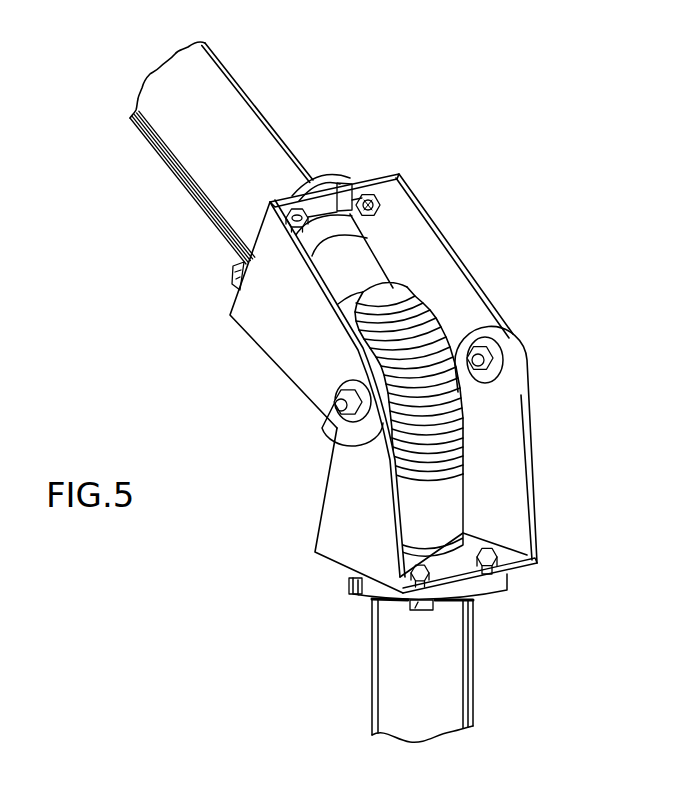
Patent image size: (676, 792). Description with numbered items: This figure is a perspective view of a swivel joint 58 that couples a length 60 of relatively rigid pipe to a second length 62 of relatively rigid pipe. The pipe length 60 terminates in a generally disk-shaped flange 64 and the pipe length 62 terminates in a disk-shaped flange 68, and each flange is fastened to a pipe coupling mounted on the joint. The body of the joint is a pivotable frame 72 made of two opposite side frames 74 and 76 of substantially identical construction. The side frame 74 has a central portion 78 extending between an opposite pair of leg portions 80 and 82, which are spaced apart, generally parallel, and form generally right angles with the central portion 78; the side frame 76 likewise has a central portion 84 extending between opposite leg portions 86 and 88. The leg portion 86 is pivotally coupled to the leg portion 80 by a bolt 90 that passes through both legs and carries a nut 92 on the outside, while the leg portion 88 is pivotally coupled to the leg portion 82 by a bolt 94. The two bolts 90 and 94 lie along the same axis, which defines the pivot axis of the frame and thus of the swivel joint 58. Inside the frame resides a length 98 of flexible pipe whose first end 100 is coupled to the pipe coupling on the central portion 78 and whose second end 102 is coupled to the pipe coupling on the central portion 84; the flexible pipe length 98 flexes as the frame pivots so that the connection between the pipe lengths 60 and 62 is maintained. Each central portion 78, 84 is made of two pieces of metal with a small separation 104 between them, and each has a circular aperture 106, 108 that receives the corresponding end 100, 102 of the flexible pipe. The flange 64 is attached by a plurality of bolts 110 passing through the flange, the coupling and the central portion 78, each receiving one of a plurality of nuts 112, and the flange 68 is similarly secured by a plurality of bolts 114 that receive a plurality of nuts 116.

The swivel joint 58 is at (398, 378).
The length of relatively rigid pipe 60 is at (457, 668).
The length of relatively rigid pipe 62 is at (222, 85).
The disk-shaped flange 64 is at (468, 590).
The disk-shaped flange 68 is at (372, 183).
The pivotable frame 72 is at (434, 468).
The side frame 74 is at (514, 517).
The side frame 76 is at (365, 361).
The central portion 78 is at (524, 566).
The leg portion 80 is at (336, 500).
The leg portion 82 is at (518, 446).
The central portion 84 is at (382, 186).
The leg portion 86 is at (268, 335).
The leg portion 88 is at (463, 258).
The bolt 90 is at (338, 408).
The nut 92 is at (343, 384).
The bolt 94 is at (495, 357).
The length of flexible pipe 98 is at (434, 374).
The first end 100 is at (458, 512).
The second end 102 is at (364, 256).
The separation 104 is at (308, 190).
The circular aperture 106 is at (500, 553).
The circular aperture 108 is at (356, 190).
The bolts 110 is at (420, 606).
The nuts 112 is at (348, 577).
The bolts 114 is at (308, 241).
The nuts 116 is at (376, 206).